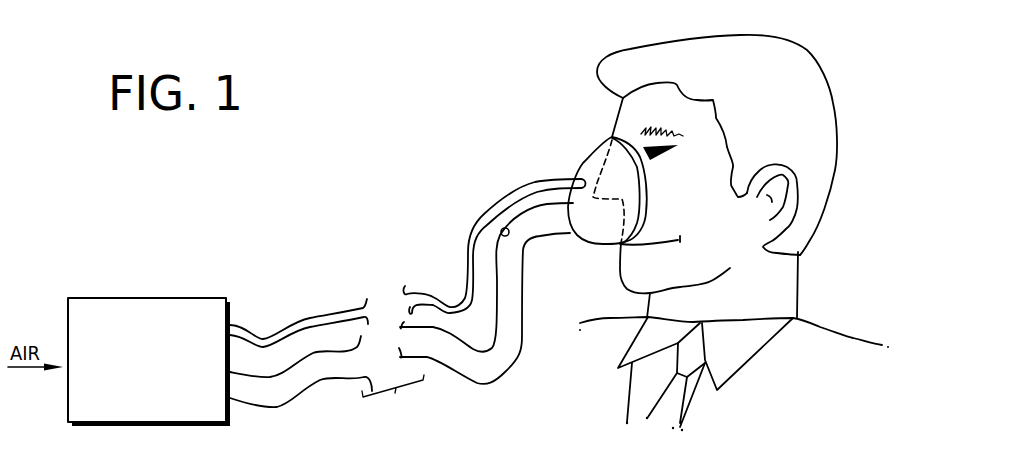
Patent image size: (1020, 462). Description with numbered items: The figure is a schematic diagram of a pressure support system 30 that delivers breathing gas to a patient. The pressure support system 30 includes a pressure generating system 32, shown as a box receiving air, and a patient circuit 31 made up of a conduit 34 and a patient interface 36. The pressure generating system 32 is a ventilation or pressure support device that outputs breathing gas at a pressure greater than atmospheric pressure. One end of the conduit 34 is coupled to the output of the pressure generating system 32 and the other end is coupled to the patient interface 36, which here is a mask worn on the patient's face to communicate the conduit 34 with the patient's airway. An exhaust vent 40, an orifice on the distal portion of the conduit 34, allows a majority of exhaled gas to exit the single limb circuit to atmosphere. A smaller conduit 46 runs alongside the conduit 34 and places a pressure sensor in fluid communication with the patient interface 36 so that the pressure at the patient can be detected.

The pressure support system 30 is at (359, 92).
The patient circuit 31 is at (521, 128).
The pressure generating system 32 is at (165, 297).
The conduit 34 is at (270, 377).
The patient interface 36 is at (585, 172).
The exhaust vent 40 is at (501, 229).
The conduit 46 is at (317, 317).